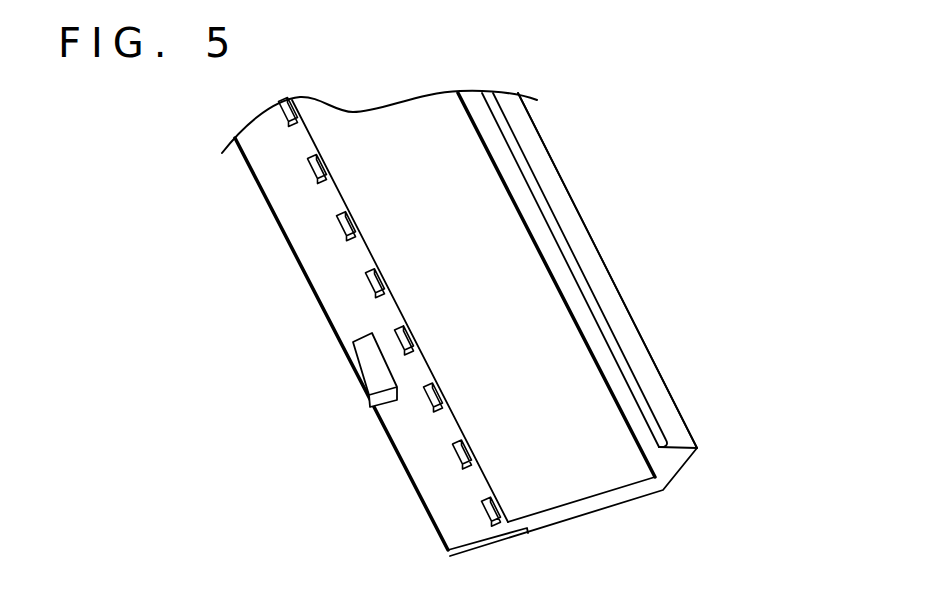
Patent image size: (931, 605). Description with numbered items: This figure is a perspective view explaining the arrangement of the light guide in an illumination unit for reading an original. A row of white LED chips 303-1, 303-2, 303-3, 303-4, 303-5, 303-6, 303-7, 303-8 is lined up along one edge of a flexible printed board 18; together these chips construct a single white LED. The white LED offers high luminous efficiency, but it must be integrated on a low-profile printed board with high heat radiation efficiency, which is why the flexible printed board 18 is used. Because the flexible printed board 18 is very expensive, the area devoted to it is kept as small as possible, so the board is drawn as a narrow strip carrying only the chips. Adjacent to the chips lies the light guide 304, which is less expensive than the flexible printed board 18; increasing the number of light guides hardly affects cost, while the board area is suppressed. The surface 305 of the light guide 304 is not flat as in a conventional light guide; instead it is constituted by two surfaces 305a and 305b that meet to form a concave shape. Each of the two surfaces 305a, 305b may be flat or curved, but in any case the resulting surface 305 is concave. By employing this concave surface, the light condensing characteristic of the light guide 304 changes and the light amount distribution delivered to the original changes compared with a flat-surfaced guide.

The flexible printed board 18 is at (420, 457).
The white LED chip 303-1 is at (485, 516).
The white LED chip 303-2 is at (455, 458).
The white LED chip 303-3 is at (426, 400).
The white LED chip 303-4 is at (397, 341).
The white LED chip 303-5 is at (367, 285).
The white LED chip 303-6 is at (336, 228).
The white LED chip 303-7 is at (306, 170).
The white LED chip 303-8 is at (280, 113).
The light guide 304 is at (608, 498).
The surface of the light guide 305 is at (648, 270).
The surface 305a is at (622, 357).
The surface 305b is at (645, 367).